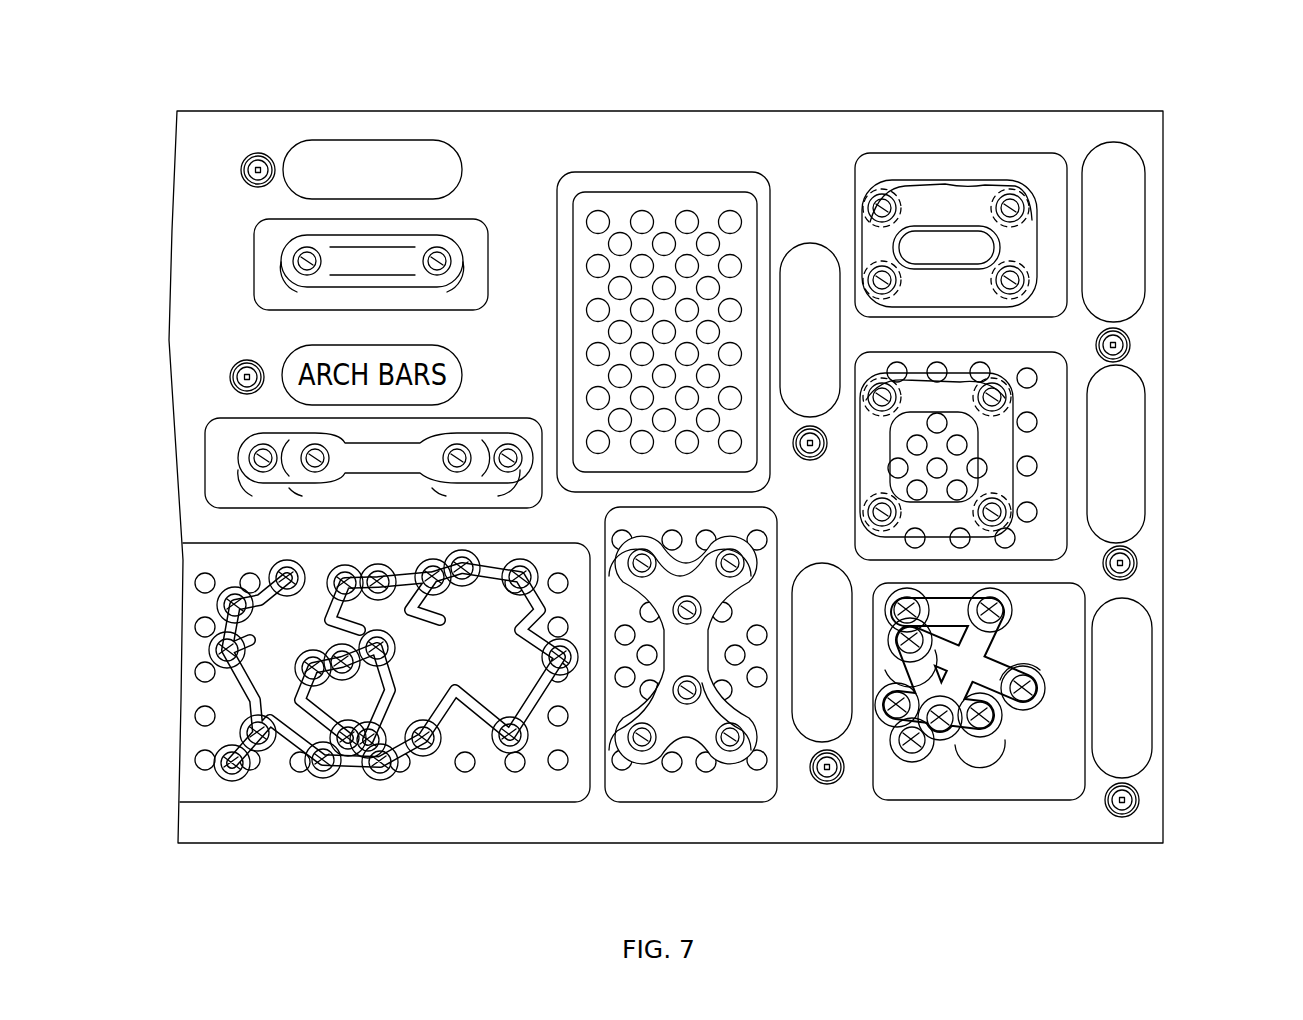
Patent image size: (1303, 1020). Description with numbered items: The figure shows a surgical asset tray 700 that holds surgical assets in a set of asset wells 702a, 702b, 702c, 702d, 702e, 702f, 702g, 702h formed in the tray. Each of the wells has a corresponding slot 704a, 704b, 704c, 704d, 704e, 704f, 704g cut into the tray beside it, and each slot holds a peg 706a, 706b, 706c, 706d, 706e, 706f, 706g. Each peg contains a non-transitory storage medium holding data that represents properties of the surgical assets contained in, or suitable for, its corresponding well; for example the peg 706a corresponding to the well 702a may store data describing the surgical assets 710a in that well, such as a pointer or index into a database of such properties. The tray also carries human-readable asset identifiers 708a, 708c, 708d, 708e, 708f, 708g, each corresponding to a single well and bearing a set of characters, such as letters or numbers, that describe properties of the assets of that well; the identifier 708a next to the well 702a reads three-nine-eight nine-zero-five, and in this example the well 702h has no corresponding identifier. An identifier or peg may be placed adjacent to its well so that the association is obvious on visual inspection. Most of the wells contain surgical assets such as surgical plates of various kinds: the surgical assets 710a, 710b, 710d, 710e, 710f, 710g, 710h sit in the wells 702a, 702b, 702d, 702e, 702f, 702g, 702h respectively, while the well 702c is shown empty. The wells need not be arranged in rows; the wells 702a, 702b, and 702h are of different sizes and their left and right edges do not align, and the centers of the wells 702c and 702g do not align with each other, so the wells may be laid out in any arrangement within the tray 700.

The surgical asset tray 700 is at (1243, 92).
The asset well 702a is at (275, 295).
The asset well 702b is at (214, 460).
The asset well 702c is at (577, 222).
The asset well 702d is at (1040, 170).
The asset well 702e is at (998, 482).
The asset well 702f is at (1040, 757).
The asset well 702g is at (645, 787).
The asset well 702h is at (350, 785).
The slot 704a is at (258, 154).
The slot 704b is at (234, 367).
The slot 704c is at (801, 428).
The slot 704d is at (1127, 340).
The slot 704e is at (1134, 566).
The slot 704f is at (1137, 803).
The slot 704g is at (826, 783).
The peg 706a is at (240, 166).
The peg 706b is at (231, 376).
The peg 706c is at (797, 435).
The peg 706d is at (1122, 358).
The peg 706e is at (1126, 578).
The peg 706f is at (1130, 812).
The peg 706g is at (838, 778).
The human-readable asset identifier 708a is at (353, 140).
The human-readable asset identifier 708c is at (797, 290).
The human-readable asset identifier 708d is at (1123, 212).
The human-readable asset identifier 708e is at (1140, 440).
The human-readable asset identifier 708f is at (1105, 738).
The human-readable asset identifier 708g is at (800, 745).
The surgical asset 710a is at (275, 243).
The surgical asset 710b is at (355, 488).
The surgical asset 710d is at (960, 200).
The surgical asset 710e is at (940, 488).
The surgical asset 710f is at (957, 690).
The surgical asset 710g is at (713, 720).
The surgical asset 710h is at (500, 665).